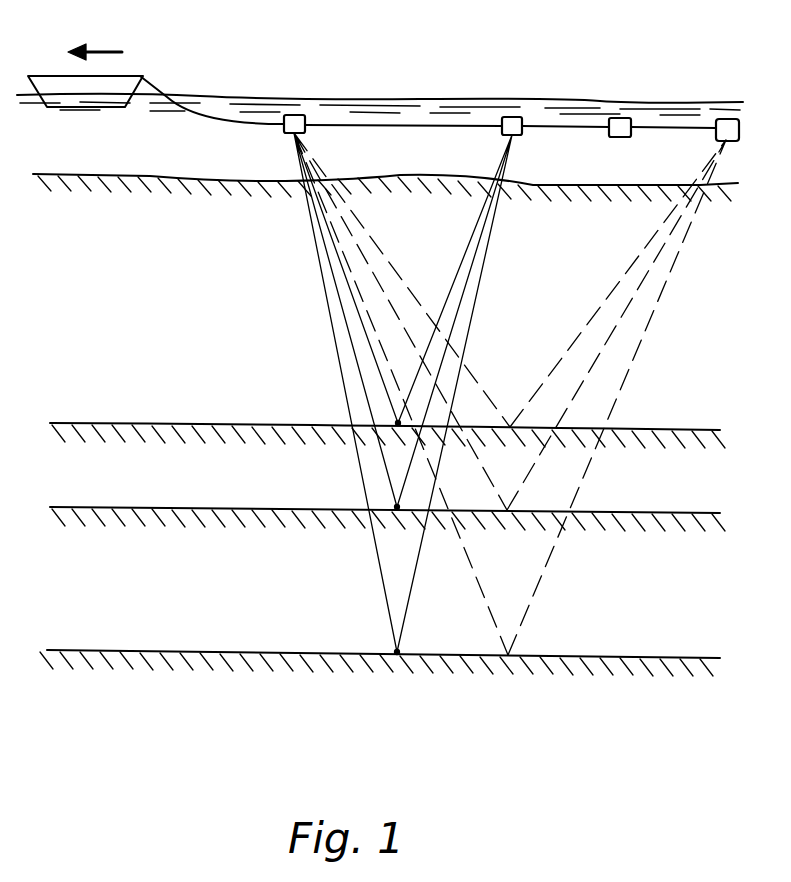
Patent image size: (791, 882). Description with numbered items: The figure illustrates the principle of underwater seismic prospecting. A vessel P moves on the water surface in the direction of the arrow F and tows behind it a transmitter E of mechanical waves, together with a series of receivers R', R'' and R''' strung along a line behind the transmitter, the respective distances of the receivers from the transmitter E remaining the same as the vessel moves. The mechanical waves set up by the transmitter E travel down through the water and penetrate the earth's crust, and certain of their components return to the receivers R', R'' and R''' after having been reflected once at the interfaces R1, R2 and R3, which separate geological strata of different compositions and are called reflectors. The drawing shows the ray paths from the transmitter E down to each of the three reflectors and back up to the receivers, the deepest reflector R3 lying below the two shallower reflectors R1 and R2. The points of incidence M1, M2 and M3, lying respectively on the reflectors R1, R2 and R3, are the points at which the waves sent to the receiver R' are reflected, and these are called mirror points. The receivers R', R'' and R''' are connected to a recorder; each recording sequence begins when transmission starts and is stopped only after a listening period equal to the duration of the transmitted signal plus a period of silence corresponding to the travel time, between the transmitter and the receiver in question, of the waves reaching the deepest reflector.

The arrow (direction of vessel movement) F is at (95, 39).
The vessel P is at (125, 82).
The transmitter E is at (283, 130).
The receiver R' is at (459, 384).
The receiver R'' is at (596, 138).
The receiver R''' is at (623, 387).
The reflector (interface) R1 is at (387, 422).
The reflector (interface) R2 is at (387, 505).
The reflector (interface) R3 is at (380, 647).
The mirror point M1 is at (398, 420).
The mirror point M2 is at (399, 505).
The mirror point M3 is at (400, 650).